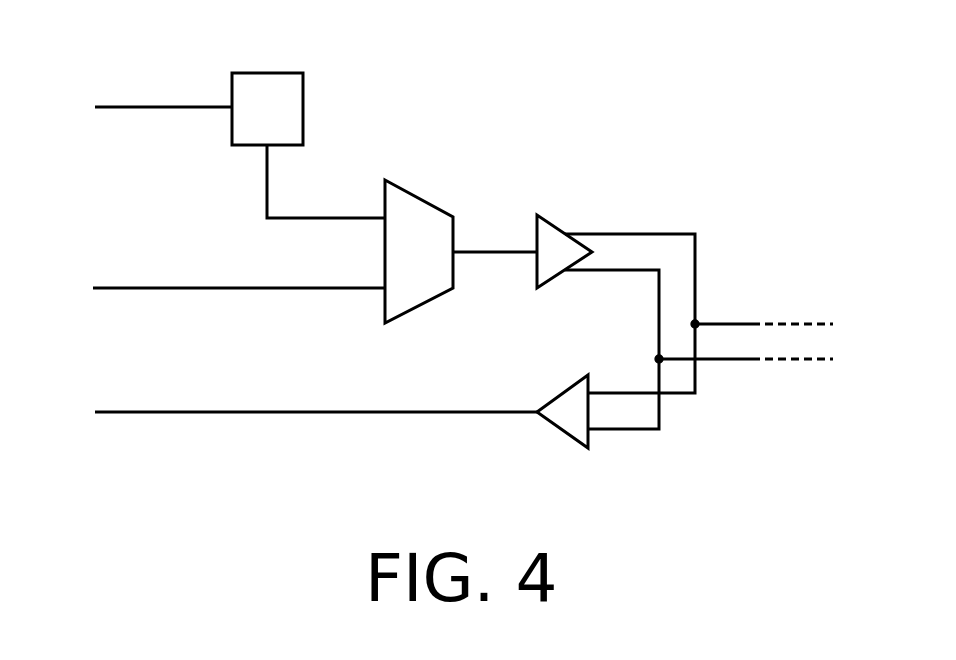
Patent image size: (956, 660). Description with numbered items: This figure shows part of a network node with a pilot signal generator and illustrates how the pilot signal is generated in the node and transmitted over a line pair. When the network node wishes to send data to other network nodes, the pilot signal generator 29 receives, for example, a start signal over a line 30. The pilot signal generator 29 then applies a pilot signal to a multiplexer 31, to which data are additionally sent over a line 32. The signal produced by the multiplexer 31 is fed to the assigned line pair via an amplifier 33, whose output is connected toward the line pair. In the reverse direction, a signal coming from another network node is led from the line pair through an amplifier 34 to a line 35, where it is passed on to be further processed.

The pilot signal generator 29 is at (283, 110).
The line 30 is at (140, 107).
The multiplexer 31 is at (412, 218).
The line 32 is at (140, 288).
The amplifier 33 is at (547, 265).
The amplifier 34 is at (567, 413).
The line 35 is at (175, 412).